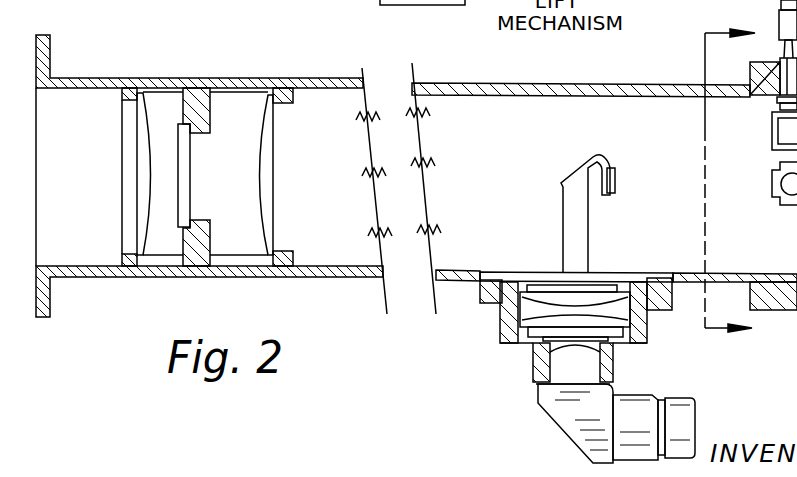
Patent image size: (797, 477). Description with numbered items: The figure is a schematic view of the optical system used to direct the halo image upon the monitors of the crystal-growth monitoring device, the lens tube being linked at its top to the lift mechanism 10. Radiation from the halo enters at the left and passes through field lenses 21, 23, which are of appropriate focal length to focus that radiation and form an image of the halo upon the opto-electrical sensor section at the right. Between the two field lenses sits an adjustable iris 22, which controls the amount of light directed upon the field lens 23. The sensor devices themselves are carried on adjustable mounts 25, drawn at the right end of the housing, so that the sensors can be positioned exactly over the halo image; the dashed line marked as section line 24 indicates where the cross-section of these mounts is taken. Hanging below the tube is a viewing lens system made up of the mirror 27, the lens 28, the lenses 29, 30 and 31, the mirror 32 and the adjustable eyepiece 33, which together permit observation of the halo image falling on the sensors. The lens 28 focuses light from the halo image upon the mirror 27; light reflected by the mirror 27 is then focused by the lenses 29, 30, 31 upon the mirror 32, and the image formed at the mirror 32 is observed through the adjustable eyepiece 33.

The lift mechanism 10 is at (395, 0).
The field lens 21 is at (140, 147).
The adjustable iris 22 is at (191, 195).
The field lens 23 is at (268, 150).
The section line 24 is at (702, 308).
The adjustable mounts 25 is at (773, 178).
The mirror 27 is at (575, 168).
The lens 28 is at (617, 182).
The lens 29 is at (597, 295).
The lens 30 is at (510, 318).
The lens 31 is at (557, 343).
The mirror 32 is at (570, 423).
The adjustable eyepiece 33 is at (687, 422).